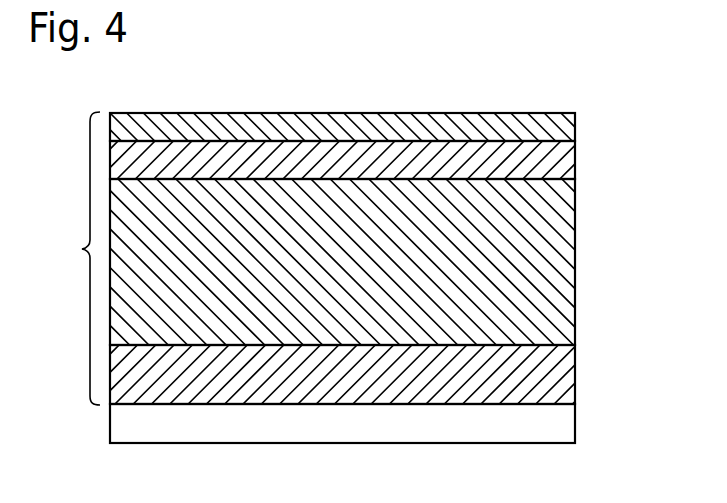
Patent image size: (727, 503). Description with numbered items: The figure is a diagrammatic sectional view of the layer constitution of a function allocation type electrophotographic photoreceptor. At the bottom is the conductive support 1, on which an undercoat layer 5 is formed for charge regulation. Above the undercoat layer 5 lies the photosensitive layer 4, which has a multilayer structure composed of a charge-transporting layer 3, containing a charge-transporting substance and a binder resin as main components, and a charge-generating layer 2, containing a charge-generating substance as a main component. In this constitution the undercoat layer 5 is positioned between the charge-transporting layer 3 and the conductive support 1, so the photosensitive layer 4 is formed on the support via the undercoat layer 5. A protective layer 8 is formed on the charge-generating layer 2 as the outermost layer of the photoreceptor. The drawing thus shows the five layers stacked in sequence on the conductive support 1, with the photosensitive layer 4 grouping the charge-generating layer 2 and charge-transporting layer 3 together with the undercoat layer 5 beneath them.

The conductive support 1 is at (550, 422).
The charge-generating layer 2 is at (550, 160).
The charge-transporting layer 3 is at (550, 250).
The photosensitive layer 4 is at (81, 258).
The undercoat layer 5 is at (550, 375).
The protective layer 8 is at (550, 123).